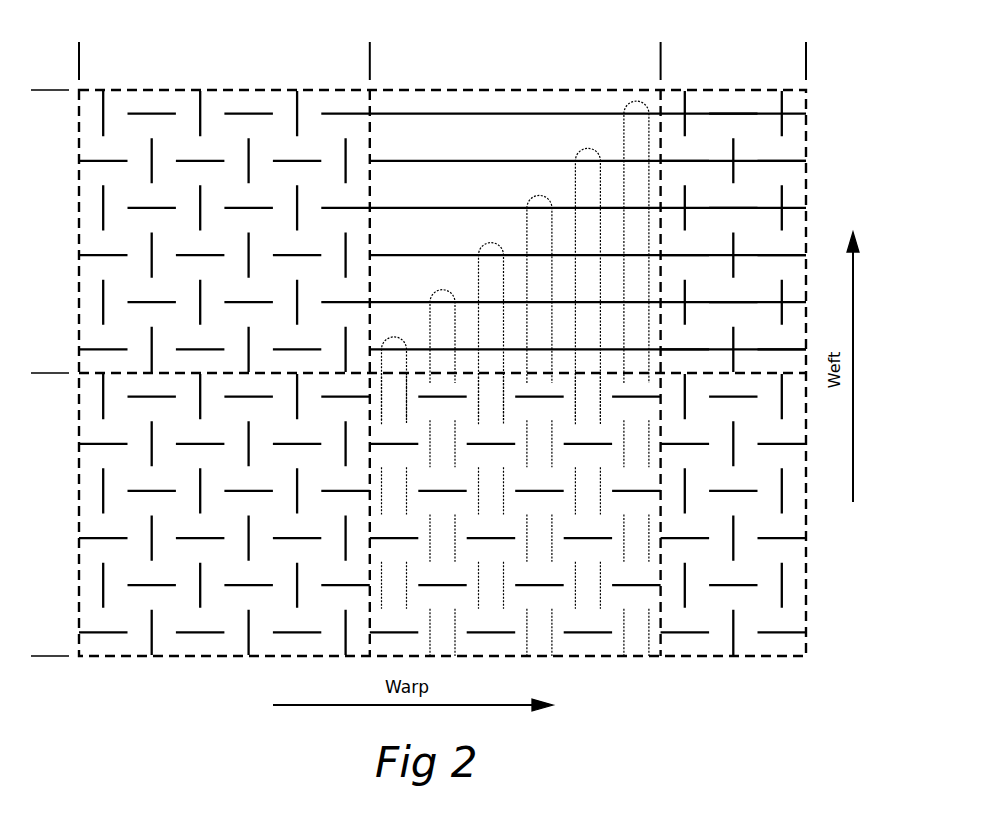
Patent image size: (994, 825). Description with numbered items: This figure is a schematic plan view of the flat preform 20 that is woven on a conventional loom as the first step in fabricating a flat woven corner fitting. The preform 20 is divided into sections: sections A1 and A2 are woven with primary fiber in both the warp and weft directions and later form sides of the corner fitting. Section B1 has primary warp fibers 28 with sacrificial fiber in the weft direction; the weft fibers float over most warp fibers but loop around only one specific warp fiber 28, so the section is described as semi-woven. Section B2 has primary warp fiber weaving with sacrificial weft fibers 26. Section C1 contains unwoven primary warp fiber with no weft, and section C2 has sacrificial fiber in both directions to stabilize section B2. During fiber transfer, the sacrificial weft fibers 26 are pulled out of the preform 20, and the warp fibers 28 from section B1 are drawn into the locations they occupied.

The flat preform 20 is at (475, 363).
The sacrificial weft fibers 26 is at (553, 658).
The warp fibers 28 is at (552, 115).